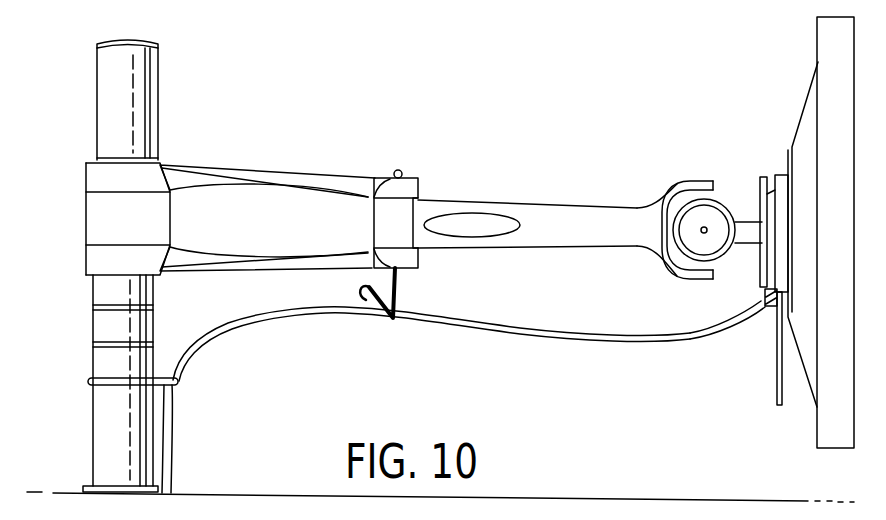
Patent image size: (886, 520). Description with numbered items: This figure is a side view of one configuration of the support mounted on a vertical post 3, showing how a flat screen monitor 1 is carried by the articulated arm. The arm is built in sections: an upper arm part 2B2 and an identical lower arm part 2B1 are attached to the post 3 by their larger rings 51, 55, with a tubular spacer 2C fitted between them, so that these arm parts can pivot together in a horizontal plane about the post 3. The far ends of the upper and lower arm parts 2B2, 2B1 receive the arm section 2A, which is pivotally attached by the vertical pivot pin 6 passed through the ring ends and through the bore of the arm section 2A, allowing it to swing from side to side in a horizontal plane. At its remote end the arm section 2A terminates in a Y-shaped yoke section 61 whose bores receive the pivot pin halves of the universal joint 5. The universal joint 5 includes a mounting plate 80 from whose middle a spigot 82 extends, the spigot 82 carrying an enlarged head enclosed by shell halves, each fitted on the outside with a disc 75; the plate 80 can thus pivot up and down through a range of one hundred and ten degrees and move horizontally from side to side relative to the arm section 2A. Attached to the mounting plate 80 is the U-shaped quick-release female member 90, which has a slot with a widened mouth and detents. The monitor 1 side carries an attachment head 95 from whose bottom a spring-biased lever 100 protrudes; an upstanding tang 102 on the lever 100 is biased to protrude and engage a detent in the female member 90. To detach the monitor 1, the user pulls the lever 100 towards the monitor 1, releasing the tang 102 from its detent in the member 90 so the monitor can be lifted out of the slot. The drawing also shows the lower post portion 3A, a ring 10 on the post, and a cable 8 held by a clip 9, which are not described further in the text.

The flat screen monitor 1 is at (818, 38).
The vertical post 3 is at (143, 92).
The lower post 3A is at (110, 433).
The larger ring 51 is at (97, 177).
The tubular spacer 2C is at (100, 220).
The larger ring 55 is at (97, 262).
The ring clamp 10 is at (180, 386).
The upper arm part 2B2 is at (282, 172).
The lower arm part 2B1 is at (258, 265).
The pivot pin 6 is at (403, 172).
The arm section 2A is at (580, 210).
The Y-shaped yoke section 61 is at (668, 268).
The universal joint 5 is at (688, 223).
The disc 75 is at (718, 215).
The spigot 82 is at (750, 233).
The mounting plate 80 is at (765, 177).
The attachment head 95 is at (782, 173).
The quick-release female member 90 is at (765, 299).
The lever 100 is at (777, 398).
The tang 102 is at (763, 308).
The cable 8 is at (568, 342).
The wire clip 9 is at (402, 287).